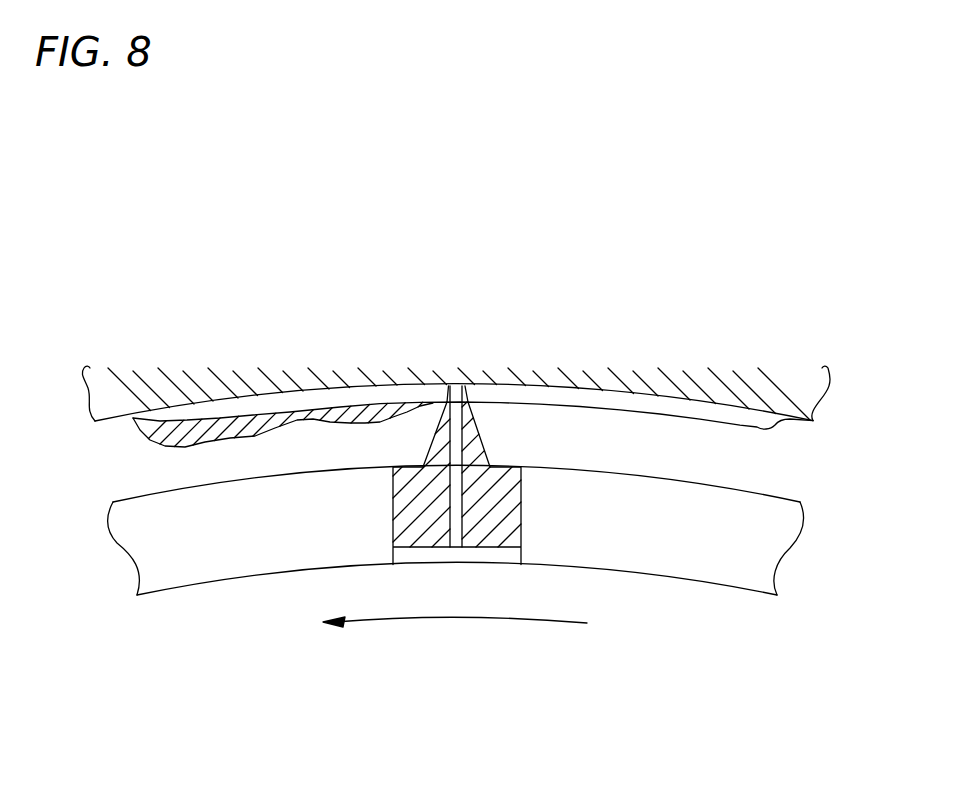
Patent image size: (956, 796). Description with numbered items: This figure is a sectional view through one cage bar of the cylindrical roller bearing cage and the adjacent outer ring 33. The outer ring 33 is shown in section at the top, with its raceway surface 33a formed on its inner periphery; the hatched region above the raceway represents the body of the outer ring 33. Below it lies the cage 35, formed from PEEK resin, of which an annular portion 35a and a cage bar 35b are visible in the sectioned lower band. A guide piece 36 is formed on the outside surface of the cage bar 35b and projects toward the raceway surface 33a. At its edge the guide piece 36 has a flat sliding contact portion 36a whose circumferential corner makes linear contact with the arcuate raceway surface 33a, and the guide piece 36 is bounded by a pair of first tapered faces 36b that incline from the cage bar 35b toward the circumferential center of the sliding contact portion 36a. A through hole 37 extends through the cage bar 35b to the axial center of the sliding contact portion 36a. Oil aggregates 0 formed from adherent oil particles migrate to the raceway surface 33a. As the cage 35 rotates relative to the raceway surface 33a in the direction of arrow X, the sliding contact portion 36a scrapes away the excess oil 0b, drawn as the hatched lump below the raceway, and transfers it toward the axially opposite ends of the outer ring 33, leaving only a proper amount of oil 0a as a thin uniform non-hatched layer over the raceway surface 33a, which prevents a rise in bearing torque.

The outer ring 33 is at (317, 373).
The raceway surface 33a is at (619, 407).
The oil aggregate 0 is at (119, 433).
The proper amount oil 0a is at (707, 405).
The excess oil 0b is at (150, 442).
The cage 35 is at (263, 576).
The annular portion 35a is at (678, 558).
The cage bar 35b is at (523, 517).
The guide piece 36 is at (452, 404).
The sliding contact portion 36a is at (443, 383).
The first tapered face 36b is at (427, 446).
The through hole 37 is at (487, 425).
The direction of rotation arrow X is at (508, 620).